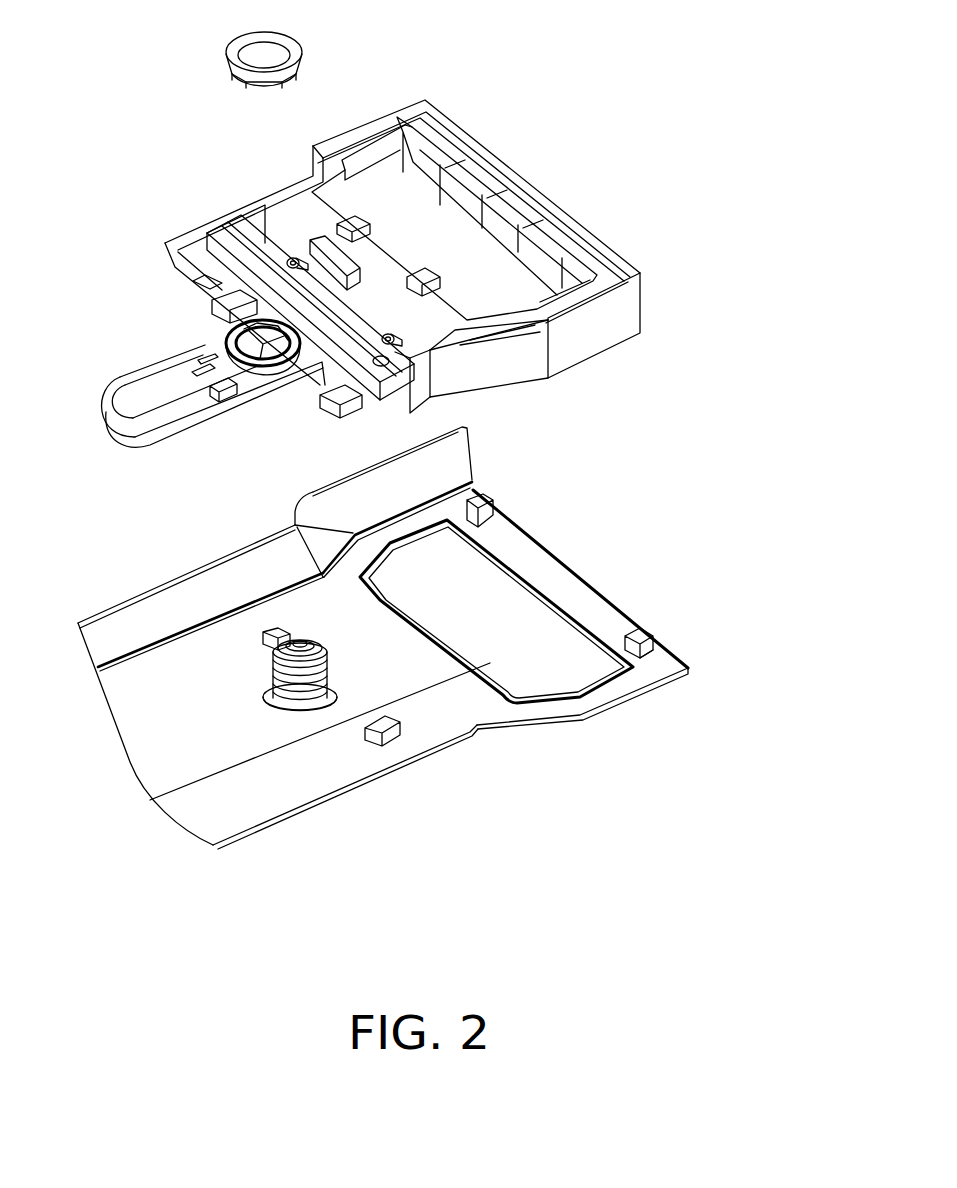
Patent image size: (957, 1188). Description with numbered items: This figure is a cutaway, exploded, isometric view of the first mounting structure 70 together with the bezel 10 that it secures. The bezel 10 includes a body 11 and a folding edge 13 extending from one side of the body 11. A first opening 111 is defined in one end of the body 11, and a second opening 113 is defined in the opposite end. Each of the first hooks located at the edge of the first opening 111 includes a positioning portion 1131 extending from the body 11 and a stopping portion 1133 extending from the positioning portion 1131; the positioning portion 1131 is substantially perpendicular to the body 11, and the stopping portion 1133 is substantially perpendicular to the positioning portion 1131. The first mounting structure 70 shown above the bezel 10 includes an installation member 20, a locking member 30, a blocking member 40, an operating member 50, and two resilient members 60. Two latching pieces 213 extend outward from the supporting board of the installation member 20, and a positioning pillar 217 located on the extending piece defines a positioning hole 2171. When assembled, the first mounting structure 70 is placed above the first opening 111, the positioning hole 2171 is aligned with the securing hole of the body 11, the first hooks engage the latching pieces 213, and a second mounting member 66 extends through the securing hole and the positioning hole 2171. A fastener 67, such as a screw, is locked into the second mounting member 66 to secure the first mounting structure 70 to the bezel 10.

The bezel 10 is at (532, 490).
The body 11 is at (423, 717).
The folding edge 13 is at (208, 584).
The installation member 20 is at (633, 310).
The locking member 30 is at (432, 135).
The blocking member 40 is at (236, 238).
The operating member 50 is at (351, 224).
The resilient member 60 is at (292, 256).
The second mounting member 66 is at (313, 703).
The fastener 67 is at (234, 48).
The first mounting structure 70 is at (545, 176).
The first opening 111 is at (531, 620).
The second opening 113 is at (742, 599).
The latching piece 213 is at (337, 397).
The positioning pillar 217 is at (170, 357).
The positioning portion 1131 is at (648, 655).
The stopping portion 1133 is at (641, 632).
The positioning hole 2171 is at (234, 333).